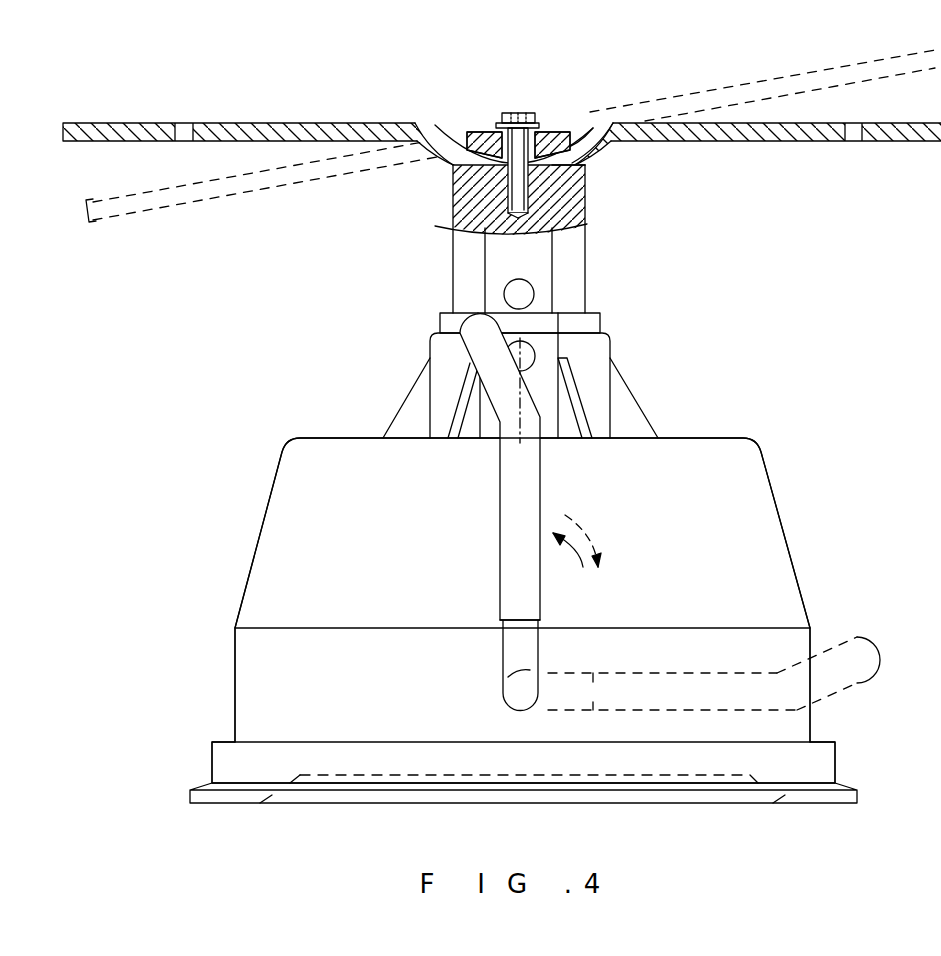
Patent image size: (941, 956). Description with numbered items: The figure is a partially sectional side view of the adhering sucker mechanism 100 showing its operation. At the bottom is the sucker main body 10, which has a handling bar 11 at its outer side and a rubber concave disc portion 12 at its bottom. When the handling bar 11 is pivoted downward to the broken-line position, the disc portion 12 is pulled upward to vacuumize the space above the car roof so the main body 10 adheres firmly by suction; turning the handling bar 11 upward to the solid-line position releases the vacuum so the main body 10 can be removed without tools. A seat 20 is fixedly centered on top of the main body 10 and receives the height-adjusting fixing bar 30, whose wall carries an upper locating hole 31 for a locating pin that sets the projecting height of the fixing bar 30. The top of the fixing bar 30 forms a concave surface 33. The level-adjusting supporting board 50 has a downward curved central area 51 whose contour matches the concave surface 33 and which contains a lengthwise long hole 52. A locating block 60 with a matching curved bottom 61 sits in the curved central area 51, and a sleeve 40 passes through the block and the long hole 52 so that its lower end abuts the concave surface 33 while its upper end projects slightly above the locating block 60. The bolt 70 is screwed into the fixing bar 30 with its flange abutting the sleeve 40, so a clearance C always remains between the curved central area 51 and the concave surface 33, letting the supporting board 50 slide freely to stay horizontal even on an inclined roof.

The sucker main body 10 is at (768, 512).
The handling bar 11 is at (503, 492).
The rubber concave disc portion 12 is at (203, 790).
The seat 20 is at (597, 351).
The height-adjusting fixing bar 30 is at (463, 263).
The upper locating hole 31 is at (518, 288).
The concave surface 33 is at (455, 184).
The sleeve 40 is at (500, 156).
The level-adjusting supporting board 50 is at (312, 125).
The curved central area 51 is at (603, 142).
The long hole 52 is at (557, 160).
The locating block 60 is at (563, 130).
The curved bottom 61 is at (551, 150).
The bolt 70 is at (513, 113).
The adhering sucker mechanism 100 is at (765, 342).
The clearance C is at (586, 158).